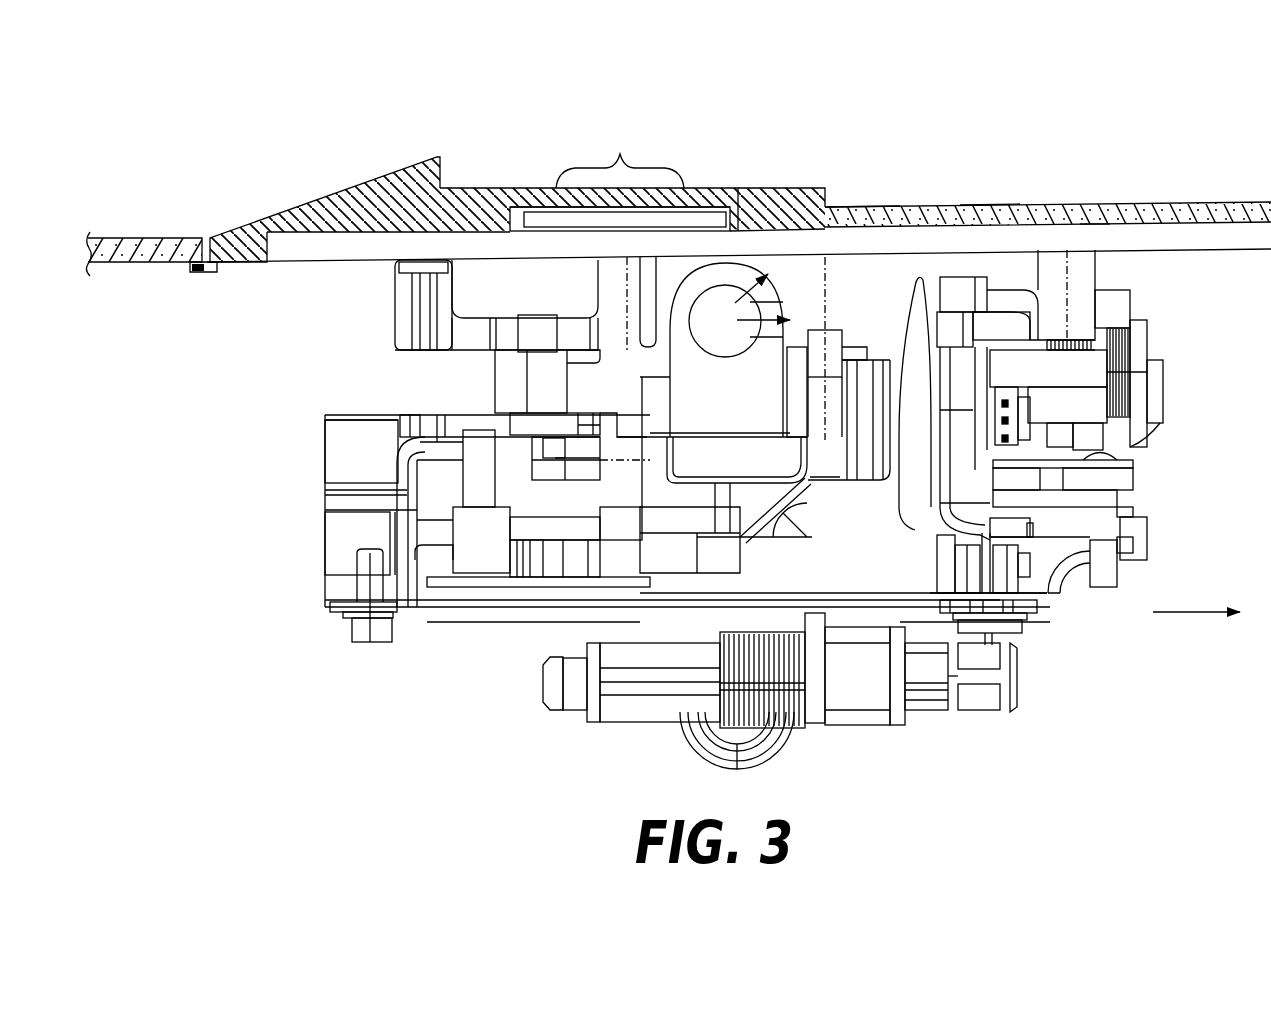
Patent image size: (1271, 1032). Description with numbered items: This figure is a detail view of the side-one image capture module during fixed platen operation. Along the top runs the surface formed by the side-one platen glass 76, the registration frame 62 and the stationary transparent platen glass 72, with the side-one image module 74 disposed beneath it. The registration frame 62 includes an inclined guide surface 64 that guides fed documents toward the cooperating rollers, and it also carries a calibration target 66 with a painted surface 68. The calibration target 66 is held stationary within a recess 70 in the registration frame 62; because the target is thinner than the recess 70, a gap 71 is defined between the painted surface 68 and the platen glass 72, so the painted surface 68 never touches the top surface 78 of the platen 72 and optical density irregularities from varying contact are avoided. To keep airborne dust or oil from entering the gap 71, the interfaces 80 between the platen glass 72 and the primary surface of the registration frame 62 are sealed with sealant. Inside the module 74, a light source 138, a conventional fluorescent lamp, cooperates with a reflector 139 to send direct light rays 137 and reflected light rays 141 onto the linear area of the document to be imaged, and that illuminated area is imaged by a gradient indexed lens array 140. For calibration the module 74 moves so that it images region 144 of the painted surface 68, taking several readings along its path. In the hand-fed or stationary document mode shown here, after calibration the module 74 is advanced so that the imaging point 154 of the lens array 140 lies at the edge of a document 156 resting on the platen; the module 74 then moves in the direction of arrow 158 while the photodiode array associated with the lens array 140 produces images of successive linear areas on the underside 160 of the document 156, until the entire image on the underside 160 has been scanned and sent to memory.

The registration frame 62 is at (460, 196).
The inclined guide surface 64 is at (300, 205).
The calibration target 66 is at (694, 215).
The painted surface 68 is at (736, 230).
The recess 70 is at (510, 216).
The gap 71 is at (536, 223).
The stationary transparent platen glass 72 is at (898, 232).
The side-one image module 74 is at (305, 578).
The side-one platen glass 76 is at (124, 237).
The top surface 78 is at (990, 213).
The interfaces 80 is at (350, 236).
The direct light rays 137 is at (735, 303).
The light source 138 is at (706, 343).
The reflector 139 is at (857, 475).
The gradient indexed lens array 140 is at (834, 336).
The reflected light rays 141 is at (756, 350).
The region 144 is at (620, 150).
The imaging point 154 is at (843, 255).
The document 156 is at (850, 212).
The arrow 158 is at (1170, 612).
The underside 160 is at (1086, 227).